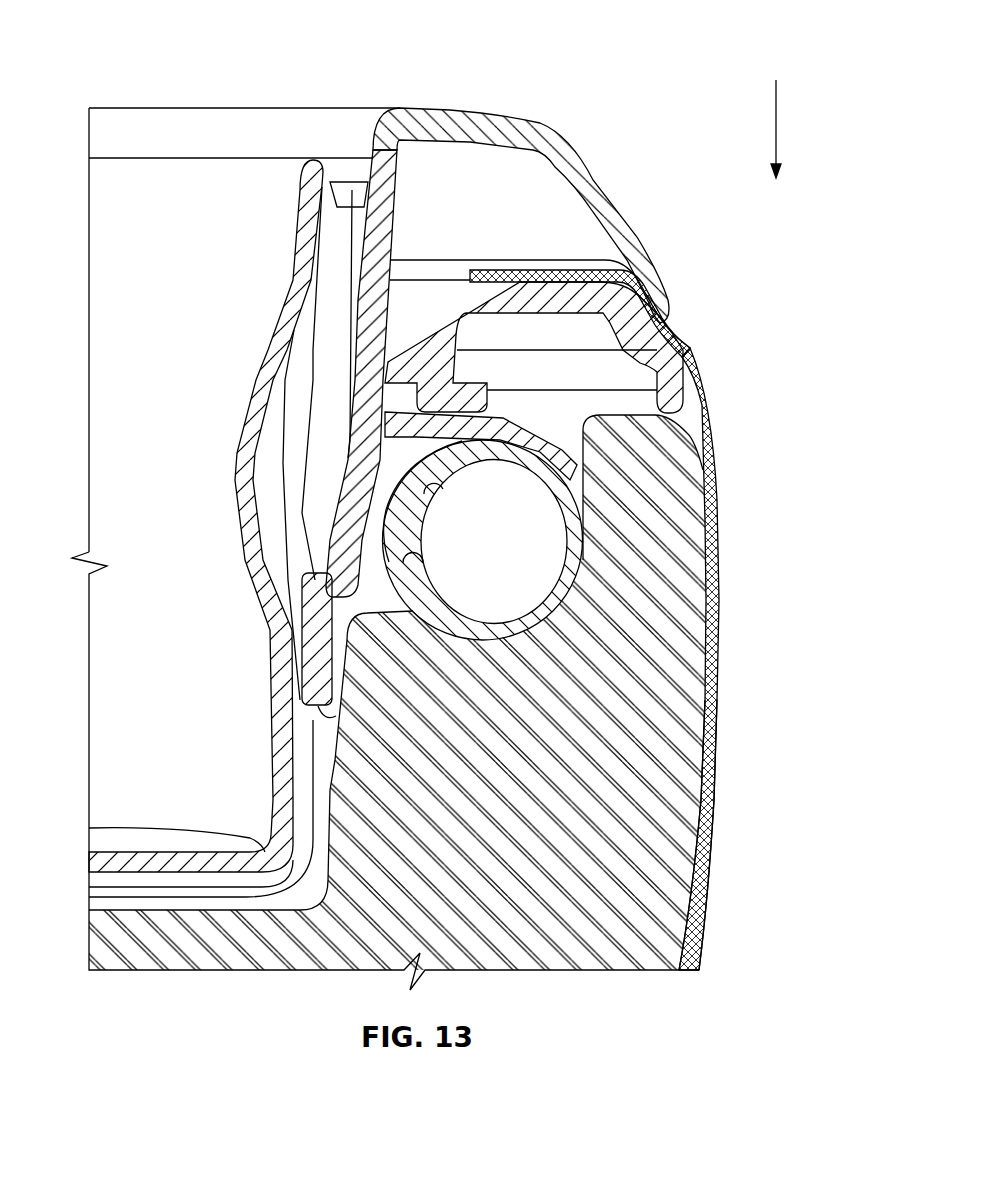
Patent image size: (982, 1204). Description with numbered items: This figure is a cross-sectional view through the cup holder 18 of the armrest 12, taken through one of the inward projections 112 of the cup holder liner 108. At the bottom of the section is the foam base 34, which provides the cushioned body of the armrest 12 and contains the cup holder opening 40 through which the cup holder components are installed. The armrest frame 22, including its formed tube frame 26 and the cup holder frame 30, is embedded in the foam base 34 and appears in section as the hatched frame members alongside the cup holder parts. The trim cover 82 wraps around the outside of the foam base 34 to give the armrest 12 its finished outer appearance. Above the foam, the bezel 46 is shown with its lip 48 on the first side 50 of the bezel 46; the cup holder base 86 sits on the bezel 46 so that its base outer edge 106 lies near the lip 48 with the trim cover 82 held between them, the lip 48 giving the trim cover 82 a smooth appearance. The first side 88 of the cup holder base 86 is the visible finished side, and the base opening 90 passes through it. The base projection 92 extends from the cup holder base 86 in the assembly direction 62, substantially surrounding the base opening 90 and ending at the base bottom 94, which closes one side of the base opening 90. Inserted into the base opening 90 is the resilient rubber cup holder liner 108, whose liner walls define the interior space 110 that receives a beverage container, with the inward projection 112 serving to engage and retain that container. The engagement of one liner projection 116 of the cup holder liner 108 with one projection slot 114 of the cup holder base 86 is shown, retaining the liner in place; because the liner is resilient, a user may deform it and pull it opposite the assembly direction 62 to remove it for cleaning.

The armrest 12 is at (712, 923).
The cup holder 18 is at (155, 97).
The armrest frame 22 is at (580, 573).
The formed tube frame 26 is at (580, 513).
The cup holder frame 30 is at (570, 463).
The foam base 34 is at (582, 953).
The cup holder opening 40 is at (260, 897).
The bezel 46 is at (547, 280).
The lip 48 is at (690, 348).
The first side of the bezel 50 is at (440, 383).
The assembly direction 62 is at (776, 118).
The trim cover 82 is at (720, 872).
The cup holder base 86 is at (258, 107).
The first side of the cup holder base 88 is at (540, 123).
The base opening 90 is at (185, 132).
The base projection 92 is at (372, 377).
The base bottom 94 is at (152, 887).
The base outer edge 106 is at (670, 282).
The cup holder liner 108 is at (135, 157).
The interior space 110 is at (110, 207).
The inward projection 112 is at (235, 472).
The projection slot 114 is at (290, 860).
The liner projection 116 is at (330, 720).